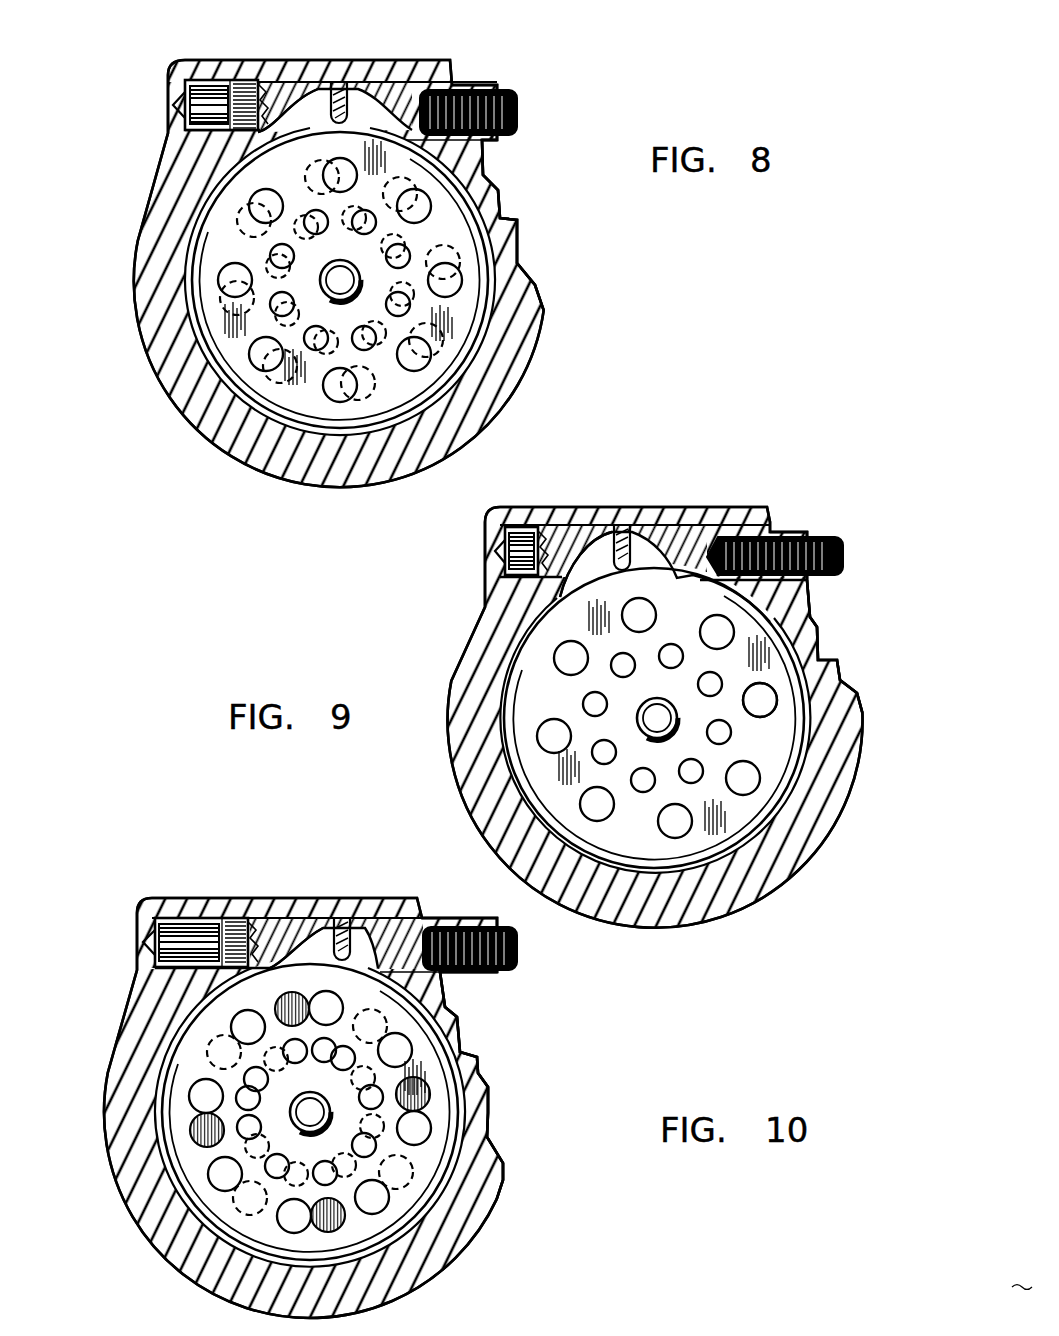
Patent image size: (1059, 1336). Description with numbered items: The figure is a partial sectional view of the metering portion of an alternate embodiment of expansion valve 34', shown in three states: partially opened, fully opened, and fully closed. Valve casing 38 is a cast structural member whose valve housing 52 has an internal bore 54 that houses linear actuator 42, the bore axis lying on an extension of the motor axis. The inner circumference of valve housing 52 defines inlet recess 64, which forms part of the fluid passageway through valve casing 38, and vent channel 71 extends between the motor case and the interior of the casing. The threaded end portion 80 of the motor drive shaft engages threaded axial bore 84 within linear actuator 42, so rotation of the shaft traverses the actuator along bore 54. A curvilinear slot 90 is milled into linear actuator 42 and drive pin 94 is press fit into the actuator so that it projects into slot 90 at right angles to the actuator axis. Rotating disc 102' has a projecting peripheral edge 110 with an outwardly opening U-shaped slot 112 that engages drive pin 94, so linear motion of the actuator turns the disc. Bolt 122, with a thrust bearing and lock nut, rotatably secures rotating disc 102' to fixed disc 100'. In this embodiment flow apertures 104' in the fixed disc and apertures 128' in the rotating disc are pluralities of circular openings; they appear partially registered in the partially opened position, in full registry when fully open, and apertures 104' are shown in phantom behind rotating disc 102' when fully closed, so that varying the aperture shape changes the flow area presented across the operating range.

In FIG. 8, the valve 34' is at (311, 273).
In FIG. 9, the valve 34' is at (620, 717).
In FIG. 10, the valve 34' is at (269, 1108).
In FIG. 8, the valve casing 38 is at (490, 158).
In FIG. 9, the valve casing 38 is at (800, 590).
In FIG. 10, the valve casing 38 is at (447, 1237).
In FIG. 8, the linear actuator 42 is at (250, 78).
In FIG. 9, the linear actuator 42 is at (522, 527).
In FIG. 10, the linear actuator 42 is at (243, 900).
In FIG. 8, the valve housing 52 is at (310, 472).
In FIG. 9, the valve housing 52 is at (720, 912).
In FIG. 10, the valve housing 52 is at (303, 1108).
In FIG. 8, the internal bore 54 is at (185, 95).
In FIG. 9, the internal bore 54 is at (495, 552).
In FIG. 10, the internal bore 54 is at (197, 897).
In FIG. 8, the inlet recess 64 is at (200, 347).
In FIG. 9, the inlet recess 64 is at (523, 640).
In FIG. 10, the inlet recess 64 is at (163, 1155).
In FIG. 8, the vent channel 71 is at (520, 228).
In FIG. 9, the vent channel 71 is at (830, 662).
In FIG. 10, the vent channel 71 is at (462, 1060).
In FIG. 8, the end portion of drive shaft 80 is at (520, 112).
In FIG. 9, the end portion of drive shaft 80 is at (823, 542).
In FIG. 10, the end portion of drive shaft 80 is at (520, 957).
In FIG. 8, the threaded axial bore 84 is at (415, 95).
In FIG. 9, the threaded axial bore 84 is at (700, 550).
In FIG. 10, the threaded axial bore 84 is at (428, 917).
In FIG. 8, the curvilinear slot 90 is at (280, 105).
In FIG. 8, the drive pin 94 is at (335, 88).
In FIG. 9, the drive pin 94 is at (618, 532).
In FIG. 10, the drive pin 94 is at (340, 927).
In FIG. 8, the fixed disc 100' is at (386, 280).
In FIG. 9, the fixed disc 100' is at (706, 718).
In FIG. 10, the fixed disc 100' is at (346, 1112).
In FIG. 8, the rotating disc 102' is at (416, 270).
In FIG. 9, the rotating disc 102' is at (710, 741).
In FIG. 10, the rotating disc 102' is at (385, 1112).
In FIG. 8, the flow apertures 104' is at (395, 294).
In FIG. 9, the flow apertures 104' is at (821, 693).
In FIG. 10, the flow apertures 104' is at (380, 1112).
In FIG. 8, the projecting peripheral edge 110 is at (300, 108).
In FIG. 9, the projecting peripheral edge 110 is at (578, 560).
In FIG. 10, the projecting peripheral edge 110 is at (300, 935).
In FIG. 8, the U-shaped slot 112 is at (348, 88).
In FIG. 9, the U-shaped slot 112 is at (626, 540).
In FIG. 10, the U-shaped slot 112 is at (357, 923).
In FIG. 8, the bolt 122 is at (336, 262).
In FIG. 9, the bolt 122 is at (655, 700).
In FIG. 10, the bolt 122 is at (318, 1083).
In FIG. 8, the apertures 128' is at (286, 352).
In FIG. 9, the apertures 128' is at (746, 718).
In FIG. 10, the apertures 128' is at (406, 1111).